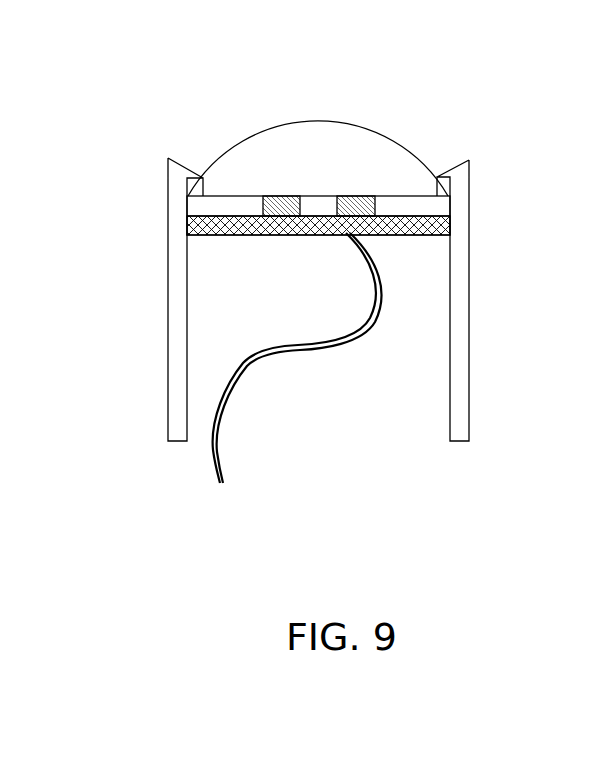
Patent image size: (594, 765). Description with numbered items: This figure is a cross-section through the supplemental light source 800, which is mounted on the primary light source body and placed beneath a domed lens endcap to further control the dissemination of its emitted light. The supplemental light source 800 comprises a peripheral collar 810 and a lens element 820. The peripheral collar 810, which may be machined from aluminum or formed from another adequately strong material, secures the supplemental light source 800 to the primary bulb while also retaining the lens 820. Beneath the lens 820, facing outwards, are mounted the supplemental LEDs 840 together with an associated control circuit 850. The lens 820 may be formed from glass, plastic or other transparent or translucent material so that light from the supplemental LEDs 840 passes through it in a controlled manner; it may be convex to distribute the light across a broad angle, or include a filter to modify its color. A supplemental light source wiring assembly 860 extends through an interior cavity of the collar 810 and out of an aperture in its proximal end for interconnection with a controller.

The supplemental light source 800 is at (257, 50).
The peripheral collar 810 is at (469, 265).
The lens element 820 is at (357, 159).
The supplemental LEDs 840 is at (347, 205).
The control circuit 850 is at (321, 232).
The supplemental light source wiring assembly 860 is at (245, 363).